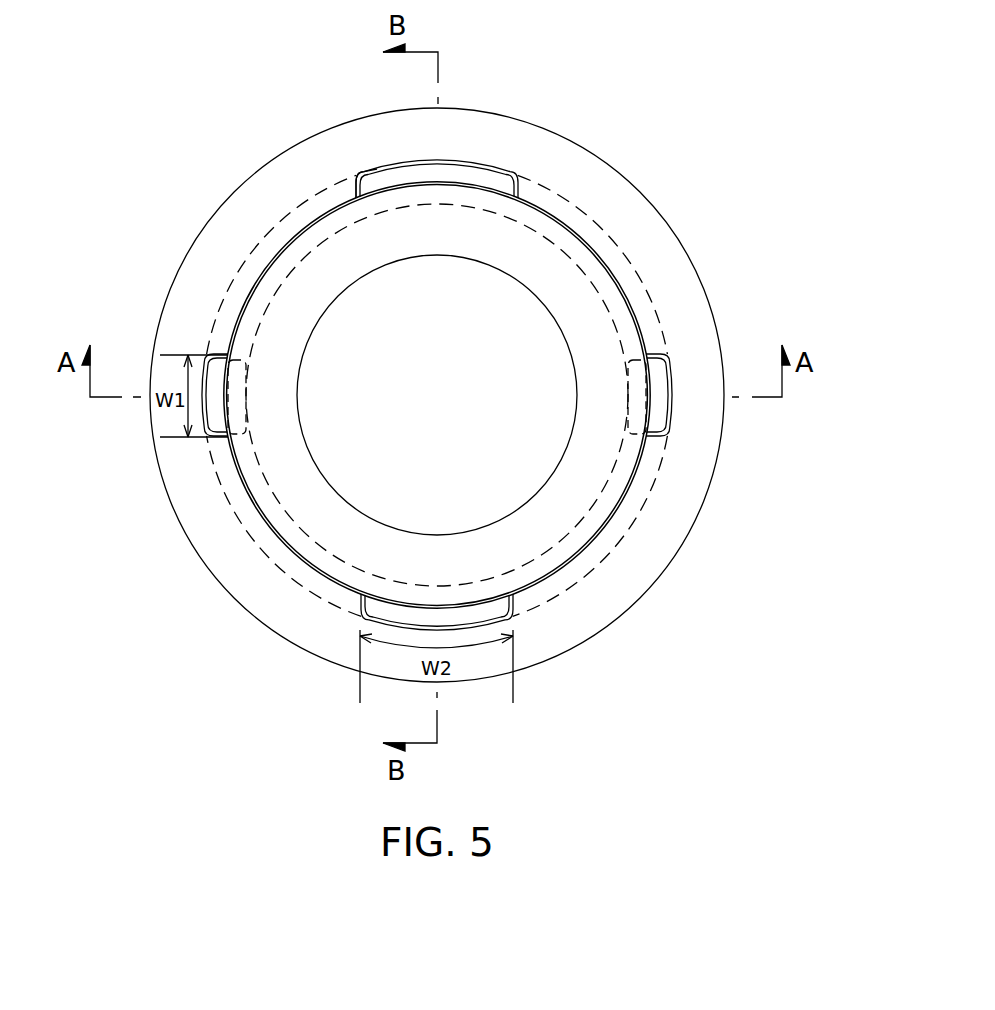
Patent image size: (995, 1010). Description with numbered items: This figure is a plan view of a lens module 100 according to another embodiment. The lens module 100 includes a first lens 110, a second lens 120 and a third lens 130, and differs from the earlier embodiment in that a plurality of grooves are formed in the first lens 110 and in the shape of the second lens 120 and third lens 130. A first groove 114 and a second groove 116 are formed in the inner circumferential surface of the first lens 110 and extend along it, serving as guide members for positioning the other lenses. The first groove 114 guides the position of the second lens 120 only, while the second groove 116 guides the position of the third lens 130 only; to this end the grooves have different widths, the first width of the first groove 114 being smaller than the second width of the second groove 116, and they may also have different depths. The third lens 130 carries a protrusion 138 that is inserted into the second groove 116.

The lens module 100 is at (665, 147).
The first lens 110 is at (673, 543).
The first groove 114 is at (668, 418).
The second groove 116 is at (380, 175).
The second lens 120 is at (265, 565).
The third lens 130 is at (603, 270).
The protrusion 138 is at (483, 170).